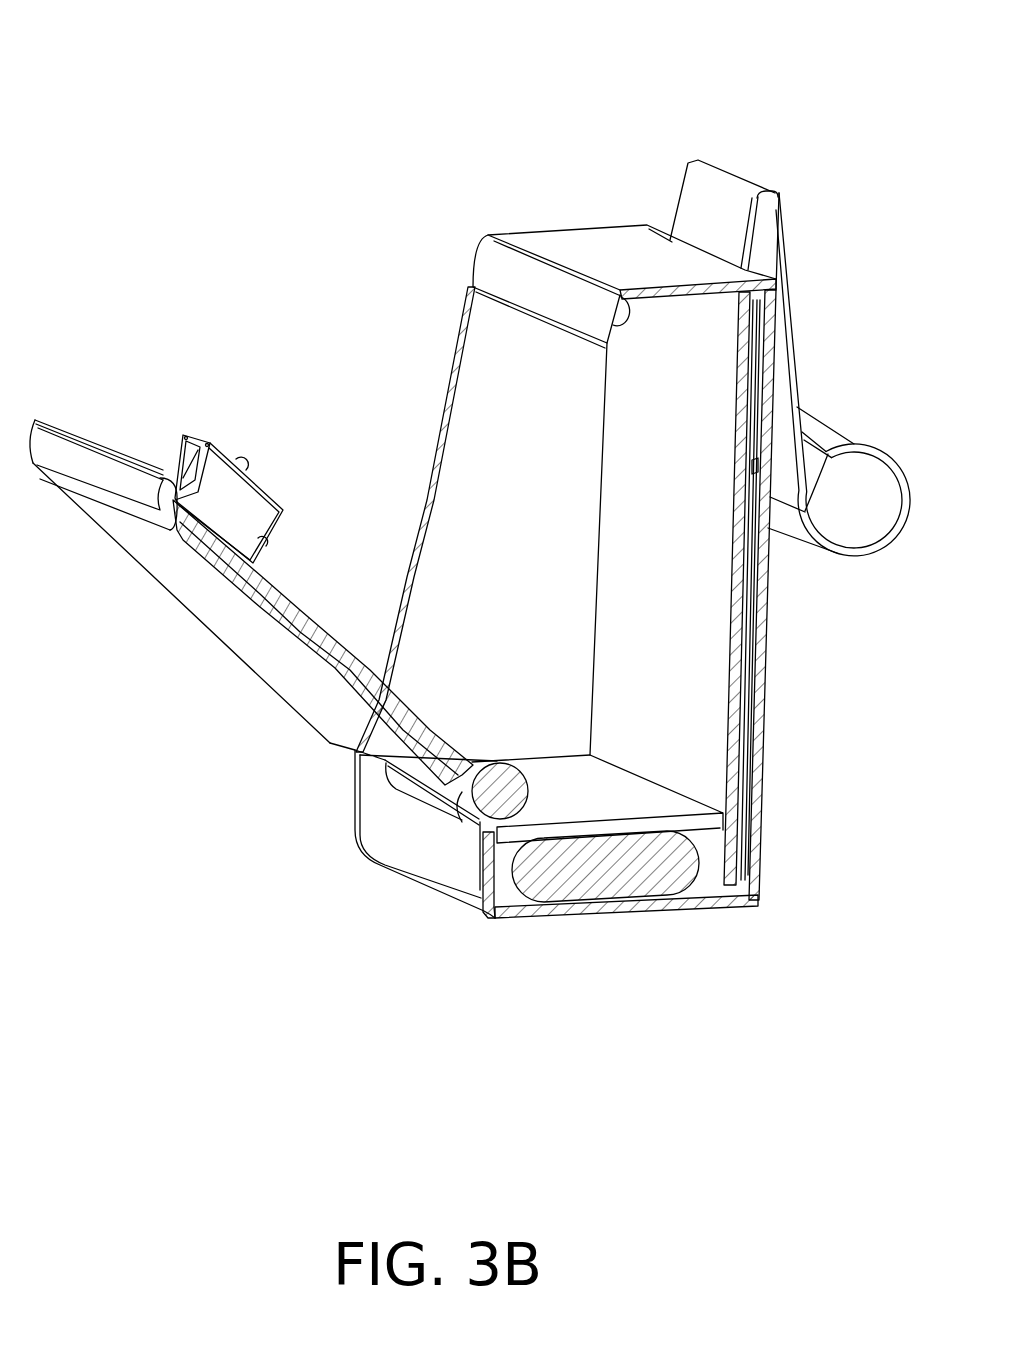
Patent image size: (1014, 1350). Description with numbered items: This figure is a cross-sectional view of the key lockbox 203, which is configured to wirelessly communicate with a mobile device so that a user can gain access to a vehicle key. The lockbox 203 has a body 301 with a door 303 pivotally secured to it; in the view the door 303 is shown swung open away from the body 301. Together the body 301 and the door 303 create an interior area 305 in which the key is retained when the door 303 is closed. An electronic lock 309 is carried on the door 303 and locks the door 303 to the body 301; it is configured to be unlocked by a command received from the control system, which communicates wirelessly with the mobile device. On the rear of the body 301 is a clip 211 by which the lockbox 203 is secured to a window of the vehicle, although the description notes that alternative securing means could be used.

The lockbox 203 is at (232, 170).
The body 301 is at (557, 228).
The door 303 is at (50, 427).
The interior area 305 is at (485, 437).
The electronic lock 309 is at (186, 434).
The clip 211 is at (818, 410).